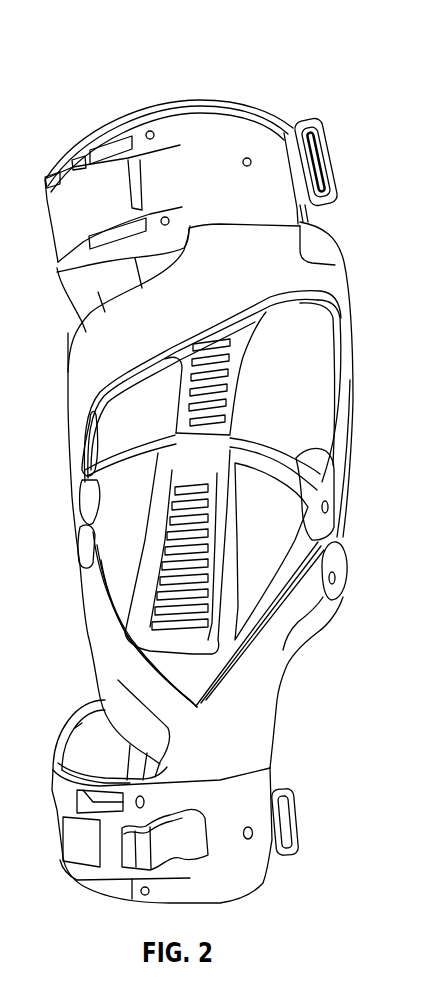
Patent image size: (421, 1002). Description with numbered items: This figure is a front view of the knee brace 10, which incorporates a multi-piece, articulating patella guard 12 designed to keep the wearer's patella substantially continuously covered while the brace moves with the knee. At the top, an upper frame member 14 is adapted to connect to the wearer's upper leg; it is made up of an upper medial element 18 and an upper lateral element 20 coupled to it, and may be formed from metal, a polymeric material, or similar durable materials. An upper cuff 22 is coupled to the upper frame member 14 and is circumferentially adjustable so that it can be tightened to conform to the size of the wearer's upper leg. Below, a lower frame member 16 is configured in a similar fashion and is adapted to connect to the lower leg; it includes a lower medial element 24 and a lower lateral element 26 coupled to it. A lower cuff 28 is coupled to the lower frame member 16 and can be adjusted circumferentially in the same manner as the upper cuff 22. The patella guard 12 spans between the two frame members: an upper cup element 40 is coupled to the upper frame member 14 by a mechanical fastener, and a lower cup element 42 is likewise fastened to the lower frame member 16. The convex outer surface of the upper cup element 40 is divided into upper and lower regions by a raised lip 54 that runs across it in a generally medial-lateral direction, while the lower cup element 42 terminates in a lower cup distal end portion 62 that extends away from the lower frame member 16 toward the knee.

The knee brace 10 is at (160, 70).
The patella guard 12 is at (308, 373).
The upper frame member 14 is at (183, 300).
The lower frame member 16 is at (208, 740).
The upper medial element 18 is at (352, 342).
The upper lateral element 20 is at (78, 371).
The upper cuff 22 is at (106, 186).
The lower medial element 24 is at (305, 619).
The lower lateral element 26 is at (90, 603).
The lower cuff 28 is at (97, 877).
The upper cup element 40 is at (130, 418).
The lower cup element 42 is at (124, 538).
The raised lip 54 is at (332, 453).
The lower cup distal end portion 62 is at (132, 465).